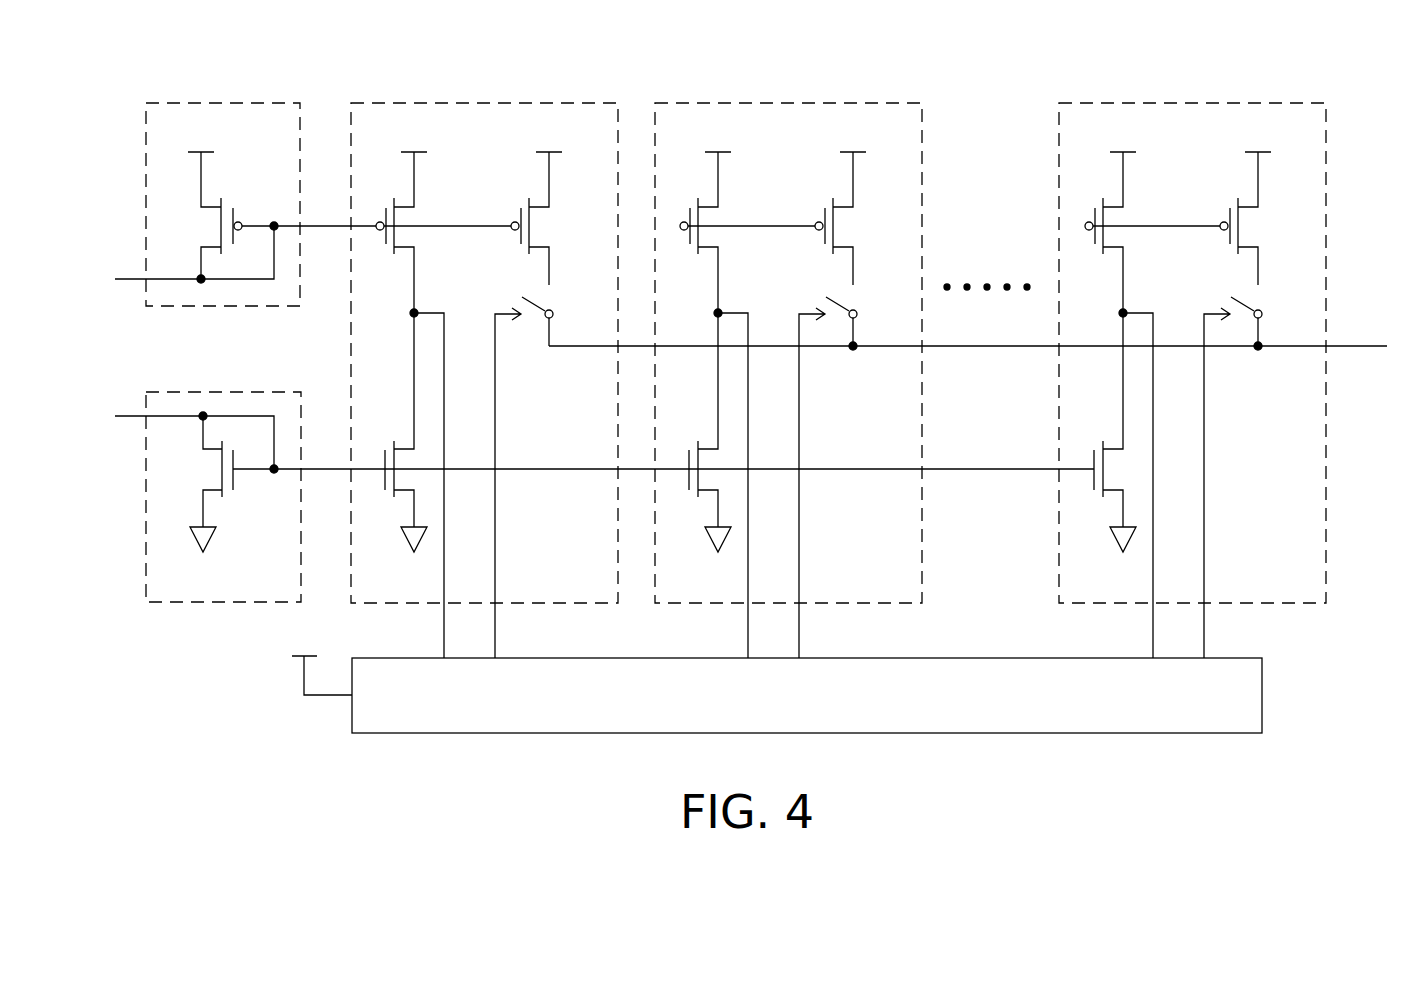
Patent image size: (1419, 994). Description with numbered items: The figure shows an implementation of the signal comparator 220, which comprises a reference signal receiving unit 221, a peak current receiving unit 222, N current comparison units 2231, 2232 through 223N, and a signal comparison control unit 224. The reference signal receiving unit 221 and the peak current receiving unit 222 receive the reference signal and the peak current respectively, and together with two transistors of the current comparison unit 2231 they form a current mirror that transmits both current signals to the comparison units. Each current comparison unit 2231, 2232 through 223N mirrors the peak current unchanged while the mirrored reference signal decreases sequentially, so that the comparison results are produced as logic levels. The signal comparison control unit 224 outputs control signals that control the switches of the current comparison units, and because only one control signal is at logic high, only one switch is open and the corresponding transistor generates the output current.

The signal comparator 220 is at (1275, 787).
The reference signal receiving unit 221 is at (255, 101).
The peak current receiving unit 222 is at (255, 393).
The current comparison unit 2231 is at (520, 101).
The current comparison unit 2232 is at (825, 101).
The current comparison unit 223N is at (1230, 101).
The signal comparison control unit 224 is at (1263, 694).